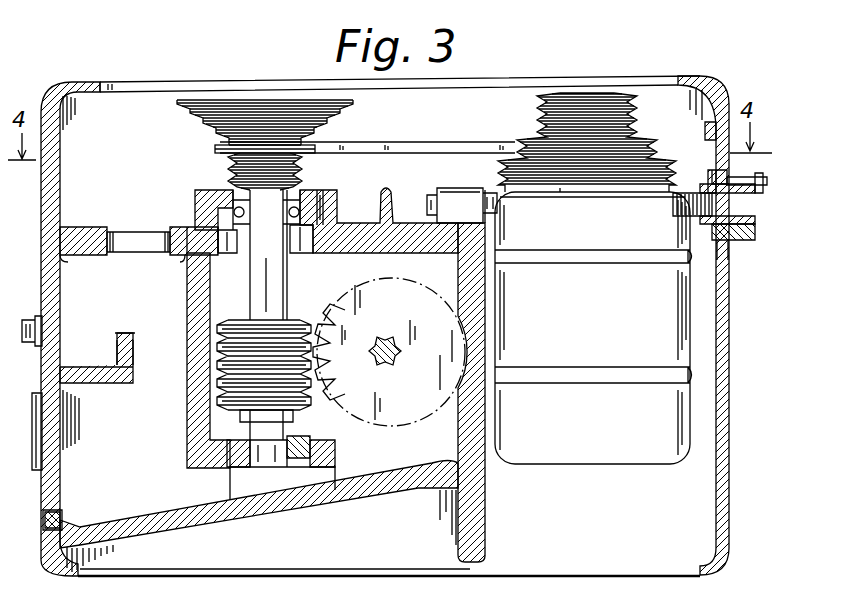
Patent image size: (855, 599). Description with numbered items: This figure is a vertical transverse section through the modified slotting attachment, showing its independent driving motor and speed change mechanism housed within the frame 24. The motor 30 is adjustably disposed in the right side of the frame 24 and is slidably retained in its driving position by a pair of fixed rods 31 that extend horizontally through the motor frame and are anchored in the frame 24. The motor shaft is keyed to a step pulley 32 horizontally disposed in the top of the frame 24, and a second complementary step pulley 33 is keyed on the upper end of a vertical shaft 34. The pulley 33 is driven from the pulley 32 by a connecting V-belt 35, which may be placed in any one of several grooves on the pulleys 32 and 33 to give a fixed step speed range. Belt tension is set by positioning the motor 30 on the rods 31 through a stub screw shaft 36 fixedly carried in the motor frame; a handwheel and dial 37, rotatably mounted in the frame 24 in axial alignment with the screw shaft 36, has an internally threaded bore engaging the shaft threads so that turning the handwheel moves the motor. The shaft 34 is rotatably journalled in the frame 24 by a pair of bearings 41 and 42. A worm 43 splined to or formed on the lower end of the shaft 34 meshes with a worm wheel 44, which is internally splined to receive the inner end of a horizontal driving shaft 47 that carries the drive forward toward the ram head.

The frame 24 is at (729, 464).
The motor 30 is at (563, 465).
The fixed rods 31 is at (427, 203).
The step pulley 32 is at (630, 126).
The step pulley 33 is at (350, 108).
The vertical shaft 34 is at (290, 271).
The V-belt 35 is at (455, 147).
The stub screw shaft 36 is at (692, 192).
The handwheel and dial 37 is at (740, 240).
The bearing 41 is at (308, 192).
The bearing 42 is at (300, 475).
The worm 43 is at (224, 316).
The worm wheel 44 is at (368, 426).
The horizontal driving shaft 47 is at (392, 366).